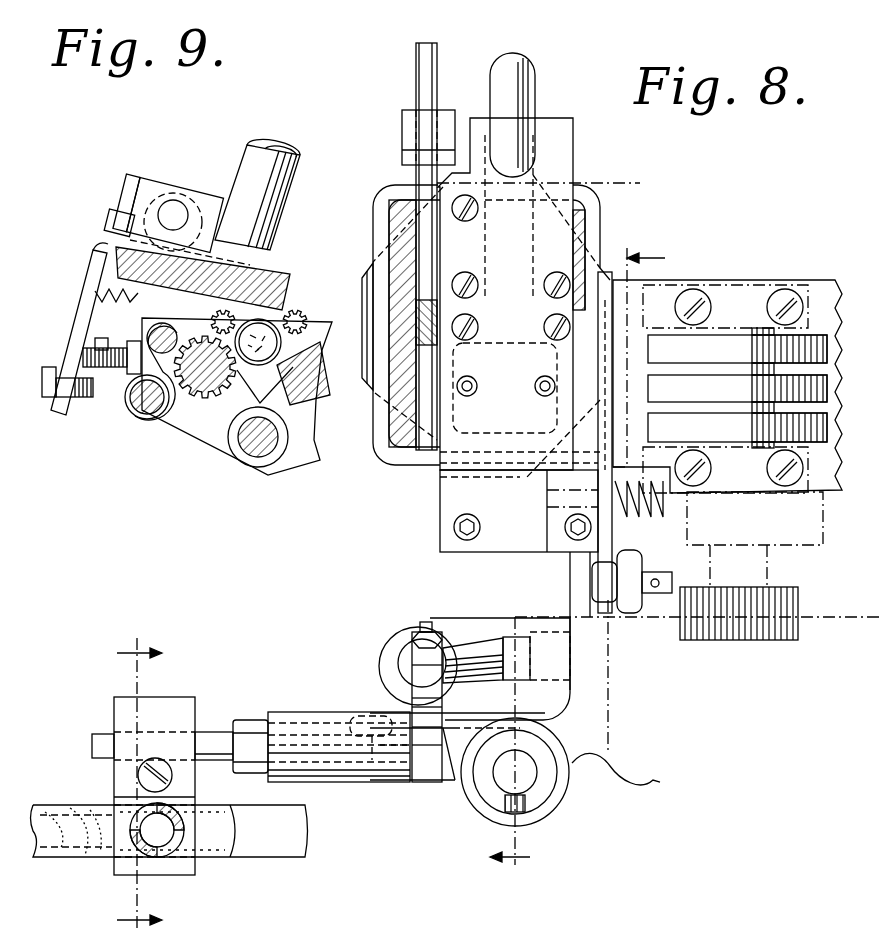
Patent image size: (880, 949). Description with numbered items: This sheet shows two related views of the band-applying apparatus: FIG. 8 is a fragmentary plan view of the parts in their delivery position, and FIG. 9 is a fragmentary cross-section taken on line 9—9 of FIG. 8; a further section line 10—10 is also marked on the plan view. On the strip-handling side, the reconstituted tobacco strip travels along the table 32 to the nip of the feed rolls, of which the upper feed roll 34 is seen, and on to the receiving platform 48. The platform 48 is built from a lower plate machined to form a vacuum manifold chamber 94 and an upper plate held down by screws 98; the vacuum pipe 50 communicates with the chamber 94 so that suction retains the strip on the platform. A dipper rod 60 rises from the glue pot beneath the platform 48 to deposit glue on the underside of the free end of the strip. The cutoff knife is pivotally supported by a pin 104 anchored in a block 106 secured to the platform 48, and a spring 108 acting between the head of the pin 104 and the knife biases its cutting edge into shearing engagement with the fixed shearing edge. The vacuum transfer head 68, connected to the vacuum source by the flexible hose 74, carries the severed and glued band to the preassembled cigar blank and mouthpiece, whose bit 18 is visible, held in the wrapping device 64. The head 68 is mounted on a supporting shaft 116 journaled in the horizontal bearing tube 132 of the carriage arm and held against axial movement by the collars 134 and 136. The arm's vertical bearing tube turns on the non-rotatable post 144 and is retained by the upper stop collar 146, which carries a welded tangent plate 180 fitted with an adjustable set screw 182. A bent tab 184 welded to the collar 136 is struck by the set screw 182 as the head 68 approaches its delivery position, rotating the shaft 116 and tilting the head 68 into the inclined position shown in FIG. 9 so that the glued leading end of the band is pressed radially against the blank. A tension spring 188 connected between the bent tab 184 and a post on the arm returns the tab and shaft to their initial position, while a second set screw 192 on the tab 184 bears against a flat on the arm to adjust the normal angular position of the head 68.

In FIG. 8, the conduit 50 is at (518, 97).
In FIG. 8, the table 32 is at (818, 280).
In FIG. 8, the feed roll 34 is at (733, 399).
In FIG. 8, the screws 98 is at (545, 290).
In FIG. 8, the dipper rod 60 is at (432, 368).
In FIG. 8, the vacuum manifold chamber 94 is at (506, 297).
In FIG. 8, the receiving platform 48 is at (437, 470).
In FIG. 8, the pin 104 is at (662, 508).
In FIG. 8, the spring 108 is at (622, 522).
In FIG. 8, the block 106 is at (565, 548).
In FIG. 8, the second set screw 192 is at (432, 622).
In FIG. 8, the bent tab 184 is at (435, 687).
In FIG. 9, the bent tab 184 is at (90, 280).
In FIG. 8, the tangent plate 180 is at (550, 723).
In FIG. 8, the vertical shaft or post 144 is at (535, 775).
In FIG. 8, the upper stop collar 146 is at (538, 802).
In FIG. 8, the collar 136 is at (430, 782).
In FIG. 8, the vacuum transfer head 68 is at (172, 695).
In FIG. 9, the vacuum transfer head 68 is at (299, 258).
In FIG. 8, the transfer head supporting shaft 116 is at (205, 735).
In FIG. 9, the transfer head supporting shaft 116 is at (165, 208).
In FIG. 8, the collar 134 is at (246, 722).
In FIG. 9, the collar 134 is at (200, 194).
In FIG. 8, the horizontal bearing tube 132 is at (312, 712).
In FIG. 8, the flexible conduit or hose 74 is at (172, 848).
In FIG. 9, the flexible conduit or hose 74 is at (283, 192).
In FIG. 8, the bit 18 is at (275, 852).
In FIG. 9, the tension spring 188 is at (138, 312).
In FIG. 9, the adjustable set screw 182 is at (112, 377).
In FIG. 9, the wrapping device 64 is at (203, 426).
In FIG. 8, the section line 10- 10 is at (679, 557).
In FIG. 8, the section line 9— 9 is at (147, 784).